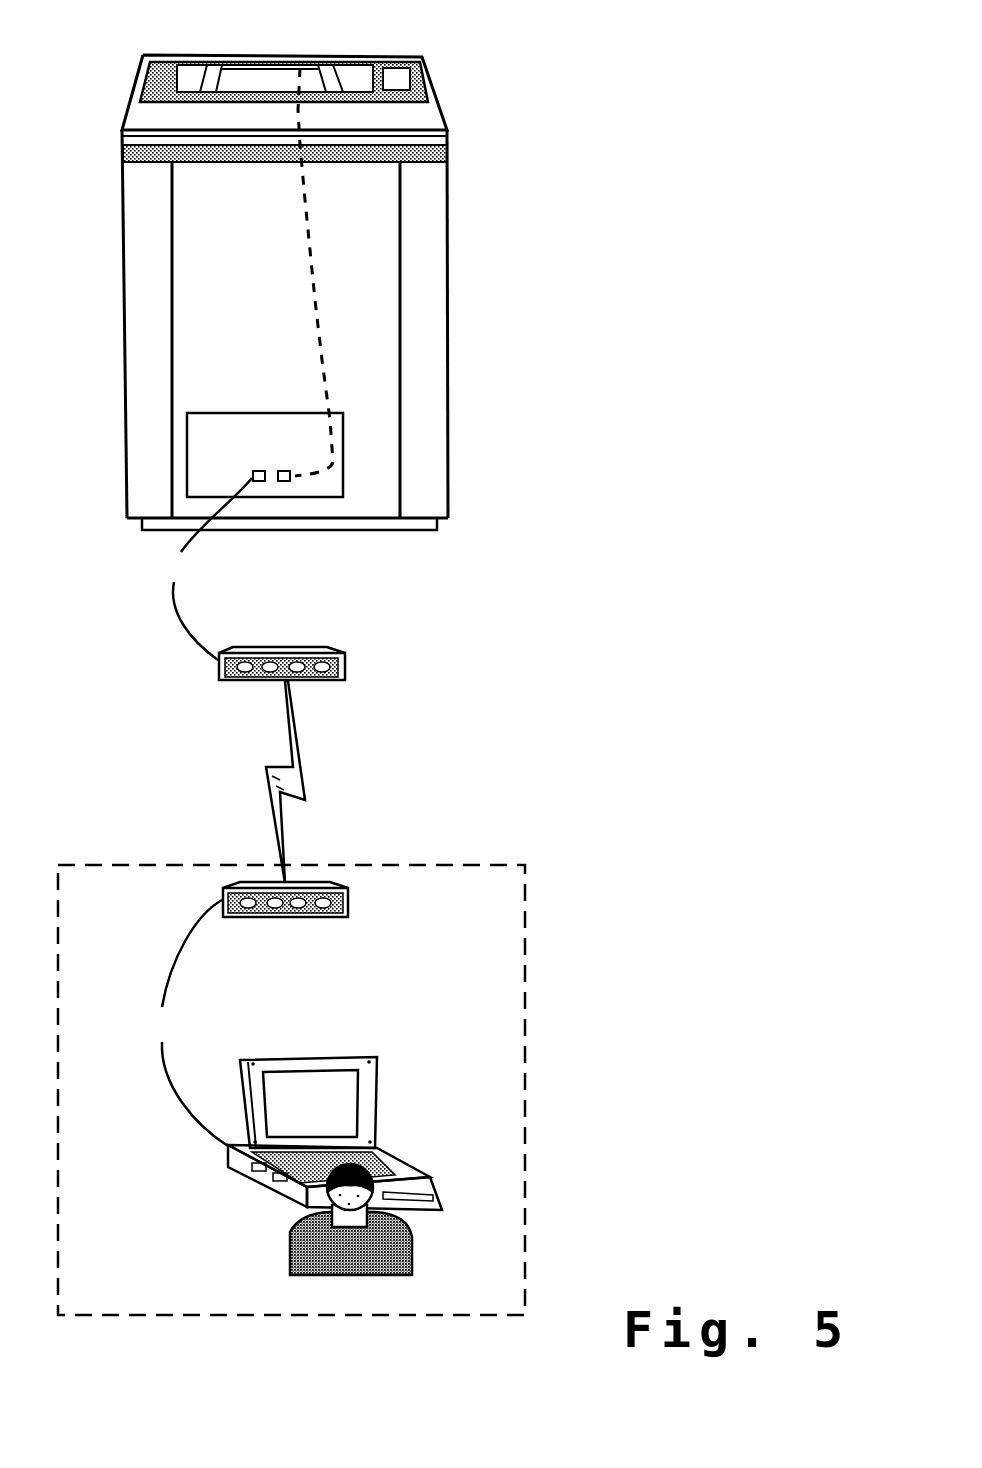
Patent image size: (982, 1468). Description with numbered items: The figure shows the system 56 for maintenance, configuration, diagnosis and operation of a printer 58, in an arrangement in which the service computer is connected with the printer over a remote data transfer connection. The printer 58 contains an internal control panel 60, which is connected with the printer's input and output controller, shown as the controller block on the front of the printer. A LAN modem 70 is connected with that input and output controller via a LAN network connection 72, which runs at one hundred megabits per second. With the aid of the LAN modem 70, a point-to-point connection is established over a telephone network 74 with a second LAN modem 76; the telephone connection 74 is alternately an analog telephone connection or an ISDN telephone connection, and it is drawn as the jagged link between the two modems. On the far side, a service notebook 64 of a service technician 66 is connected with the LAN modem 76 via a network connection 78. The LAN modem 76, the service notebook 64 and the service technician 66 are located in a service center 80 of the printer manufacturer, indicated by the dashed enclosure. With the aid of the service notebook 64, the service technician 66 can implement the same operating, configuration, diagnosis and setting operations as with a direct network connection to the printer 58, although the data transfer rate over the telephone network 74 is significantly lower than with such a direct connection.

The system 56 is at (628, 137).
The printer 58 is at (447, 232).
The internal control panel 60 is at (300, 64).
The service notebook 64 is at (377, 1118).
The service technician 66 is at (292, 1238).
The LAN modem 70 is at (347, 665).
The LAN network connection 72 is at (175, 600).
The telephone network 74 is at (265, 777).
The second LAN modem 76 is at (350, 903).
The network connection 78 is at (168, 978).
The service center 80 is at (525, 872).